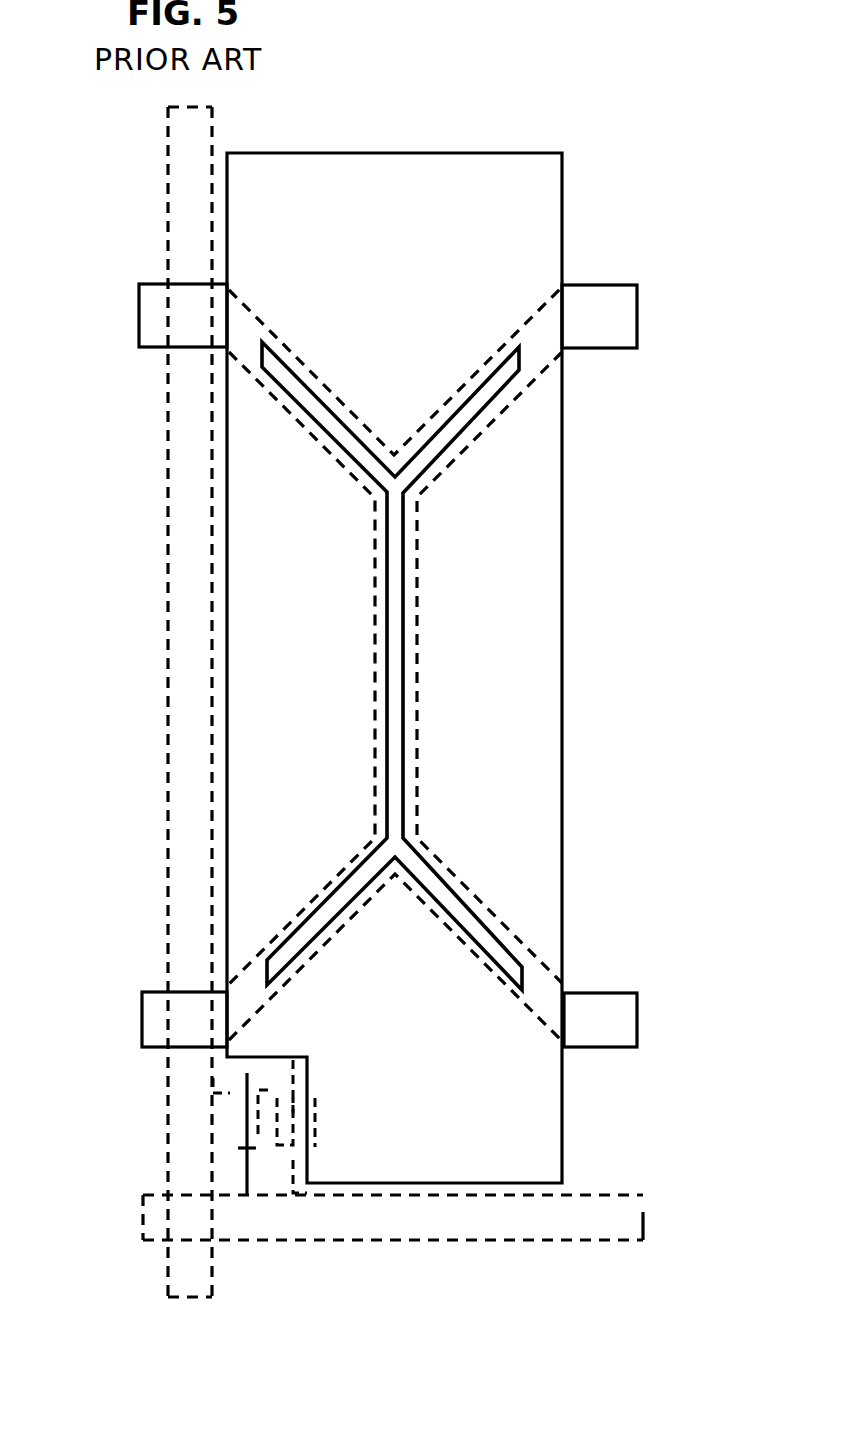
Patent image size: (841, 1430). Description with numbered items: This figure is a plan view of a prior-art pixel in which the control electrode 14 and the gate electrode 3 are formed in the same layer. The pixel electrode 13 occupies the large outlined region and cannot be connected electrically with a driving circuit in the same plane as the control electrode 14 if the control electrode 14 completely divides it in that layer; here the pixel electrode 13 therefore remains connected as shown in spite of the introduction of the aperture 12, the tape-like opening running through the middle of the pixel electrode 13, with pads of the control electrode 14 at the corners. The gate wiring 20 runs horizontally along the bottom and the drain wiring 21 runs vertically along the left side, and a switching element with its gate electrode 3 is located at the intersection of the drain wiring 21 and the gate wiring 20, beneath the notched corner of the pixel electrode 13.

The gate electrode 3 is at (268, 1081).
The aperture 12 is at (397, 686).
The pixel electrode 13 is at (520, 203).
The control electrode 14 is at (618, 319).
The gate wiring 20 is at (618, 1222).
The drain wiring 21 is at (185, 531).